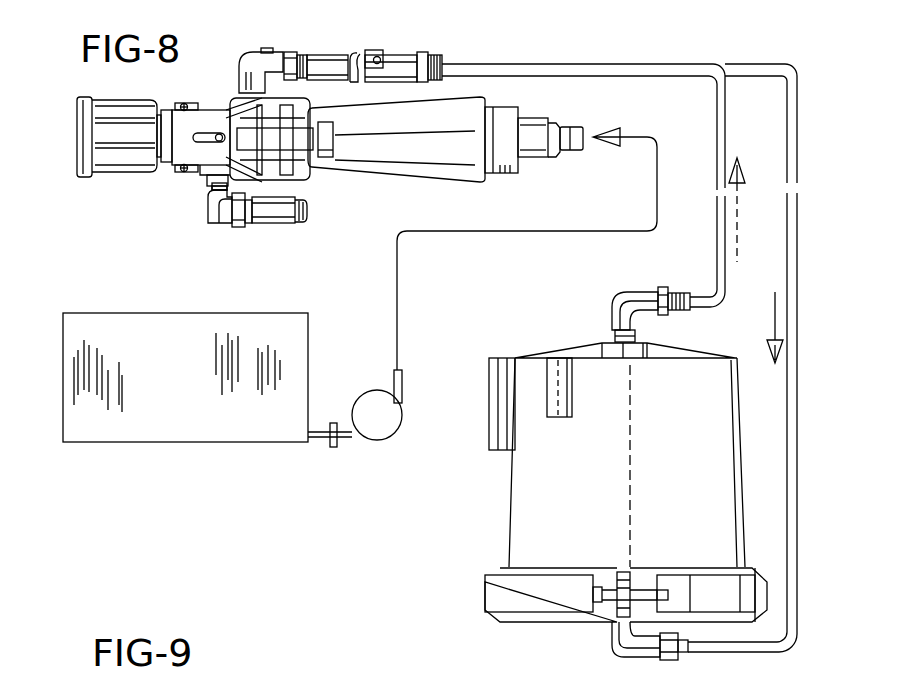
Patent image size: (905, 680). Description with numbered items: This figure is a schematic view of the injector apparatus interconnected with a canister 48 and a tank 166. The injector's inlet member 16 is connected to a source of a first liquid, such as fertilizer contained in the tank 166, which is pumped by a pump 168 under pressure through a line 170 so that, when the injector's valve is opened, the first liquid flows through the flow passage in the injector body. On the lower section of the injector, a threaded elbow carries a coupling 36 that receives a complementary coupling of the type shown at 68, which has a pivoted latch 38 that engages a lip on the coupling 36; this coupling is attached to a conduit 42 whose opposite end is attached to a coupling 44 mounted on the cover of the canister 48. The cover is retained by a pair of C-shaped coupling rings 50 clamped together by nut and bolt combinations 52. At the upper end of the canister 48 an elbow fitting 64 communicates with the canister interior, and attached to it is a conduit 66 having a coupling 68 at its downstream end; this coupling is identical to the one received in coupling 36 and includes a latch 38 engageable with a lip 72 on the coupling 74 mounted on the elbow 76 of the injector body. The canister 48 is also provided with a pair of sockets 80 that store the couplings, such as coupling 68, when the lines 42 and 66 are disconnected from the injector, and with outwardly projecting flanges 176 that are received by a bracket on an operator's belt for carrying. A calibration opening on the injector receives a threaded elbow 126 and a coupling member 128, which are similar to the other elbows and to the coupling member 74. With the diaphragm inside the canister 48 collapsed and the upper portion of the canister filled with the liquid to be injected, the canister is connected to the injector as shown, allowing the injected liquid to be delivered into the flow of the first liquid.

In FIG. 8, the member 16 is at (536, 124).
In FIG. 8, the coupling 36 is at (292, 54).
In FIG. 8, the pivoted latch 38 is at (358, 53).
In FIG. 8, the conduit 42 is at (757, 64).
In FIG. 8, the coupling 44 is at (626, 660).
In FIG. 8, the canister 48 is at (513, 500).
In FIG. 8, the C-shaped coupling rings 50 is at (490, 596).
In FIG. 8, the elbow fitting 64 is at (630, 292).
In FIG. 8, the conduit 66 is at (717, 122).
In FIG. 8, the coupling 68 is at (402, 55).
In FIG. 8, the lip 72 is at (360, 52).
In FIG. 8, the coupling 74 is at (322, 62).
In FIG. 8, the elbow 76 is at (263, 68).
In FIG. 8, the sockets 80 is at (553, 365).
In FIG. 8, the threaded elbow 126 is at (218, 207).
In FIG. 8, the coupling member 128 is at (273, 218).
In FIG. 8, the tank 166 is at (237, 325).
In FIG. 8, the pump 168 is at (393, 432).
In FIG. 8, the line 170 is at (478, 233).
In FIG. 8, the outwardly projecting flanges 176 is at (489, 400).
In FIG. 9, the nut and bolt combinations 52 is at (329, 679).